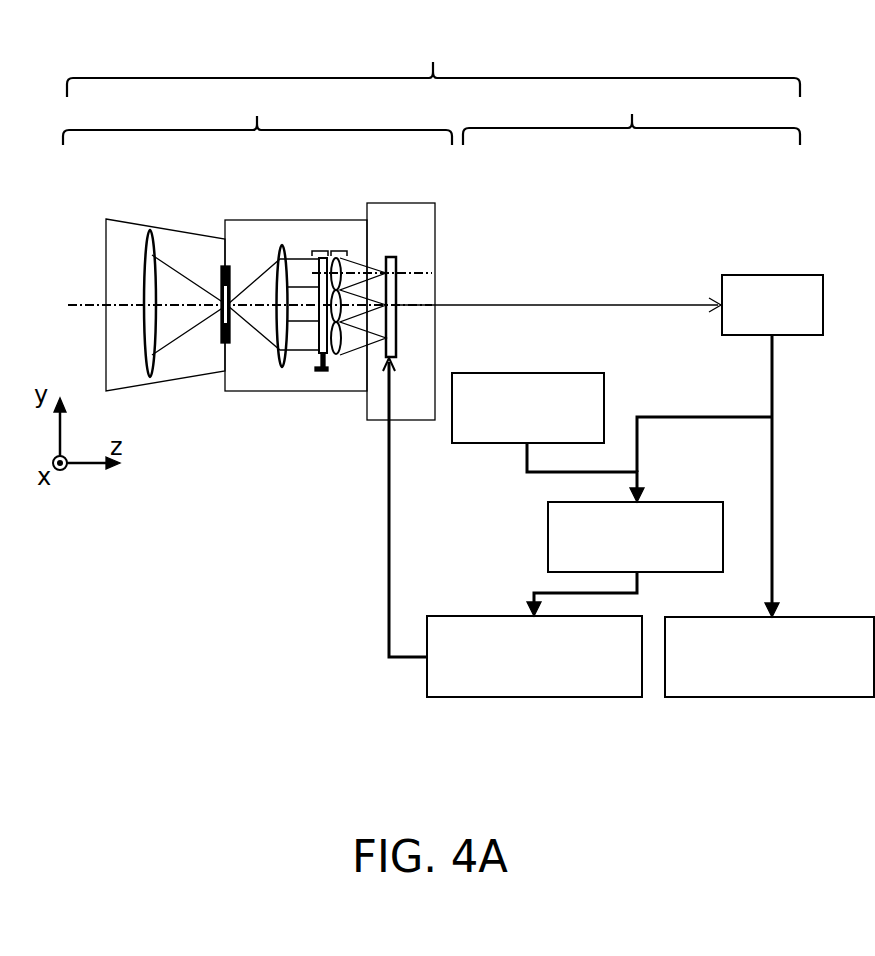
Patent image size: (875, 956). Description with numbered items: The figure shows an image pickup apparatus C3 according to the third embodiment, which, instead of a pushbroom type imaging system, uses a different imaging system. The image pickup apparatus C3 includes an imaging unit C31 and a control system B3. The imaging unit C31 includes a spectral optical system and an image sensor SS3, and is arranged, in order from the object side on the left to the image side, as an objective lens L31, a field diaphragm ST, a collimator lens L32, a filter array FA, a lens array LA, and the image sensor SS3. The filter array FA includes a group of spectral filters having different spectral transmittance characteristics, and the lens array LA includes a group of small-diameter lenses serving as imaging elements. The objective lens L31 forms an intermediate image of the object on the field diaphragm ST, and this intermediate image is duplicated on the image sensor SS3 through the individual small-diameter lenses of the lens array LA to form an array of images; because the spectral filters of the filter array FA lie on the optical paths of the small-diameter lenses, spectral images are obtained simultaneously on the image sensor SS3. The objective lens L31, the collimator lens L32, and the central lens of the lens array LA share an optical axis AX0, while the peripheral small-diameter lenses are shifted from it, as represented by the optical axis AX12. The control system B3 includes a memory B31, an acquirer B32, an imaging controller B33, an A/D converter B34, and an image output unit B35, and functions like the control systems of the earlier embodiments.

The image pickup apparatus C3 is at (433, 61).
The imaging unit C31 is at (257, 114).
The control system B3 is at (631, 114).
The objective lens L31 is at (150, 230).
The field diaphragm ST is at (227, 266).
The collimator lens L32 is at (282, 245).
The filter array FA is at (318, 251).
The lens array LA is at (340, 251).
The image sensor SS3 is at (388, 257).
The optical axis AX0 is at (82, 305).
The optical axis AX12 is at (423, 273).
The A/D converter B34 is at (742, 275).
The memory B31 is at (588, 373).
The acquirer B32 is at (548, 532).
The imaging controller B33 is at (488, 697).
The image output unit B35 is at (820, 617).